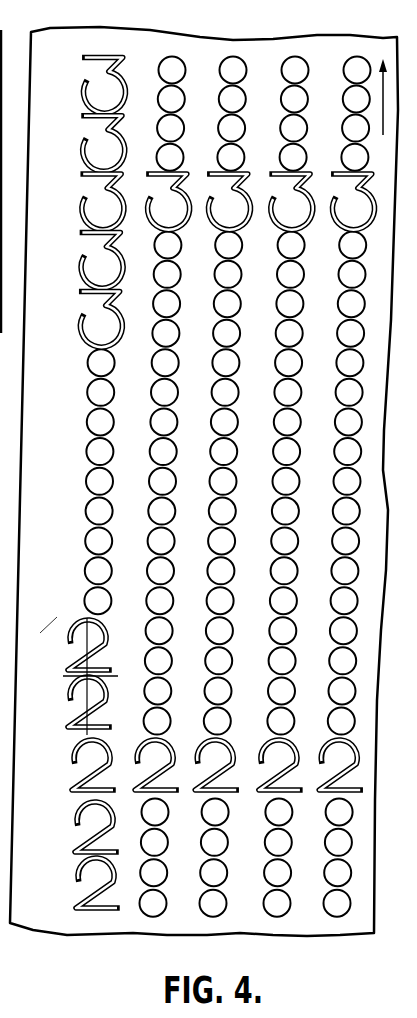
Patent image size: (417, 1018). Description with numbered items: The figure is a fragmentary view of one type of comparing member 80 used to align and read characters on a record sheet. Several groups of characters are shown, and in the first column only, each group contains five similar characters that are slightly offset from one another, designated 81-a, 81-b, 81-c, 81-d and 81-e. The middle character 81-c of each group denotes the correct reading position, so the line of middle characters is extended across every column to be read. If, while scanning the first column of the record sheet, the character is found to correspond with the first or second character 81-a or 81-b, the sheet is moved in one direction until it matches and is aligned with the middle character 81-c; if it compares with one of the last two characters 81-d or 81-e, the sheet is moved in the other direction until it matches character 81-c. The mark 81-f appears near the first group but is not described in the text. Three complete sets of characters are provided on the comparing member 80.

The comparing member 80 is at (305, 905).
The first offset character of the group 81-a is at (65, 645).
The second offset character of the group 81-b is at (65, 702).
The middle character of the group 81-c is at (66, 765).
The fourth offset character of the group 81-d is at (69, 827).
The fifth offset character of the group 81-e is at (68, 883).
The registration mark lines 81-f is at (106, 675).